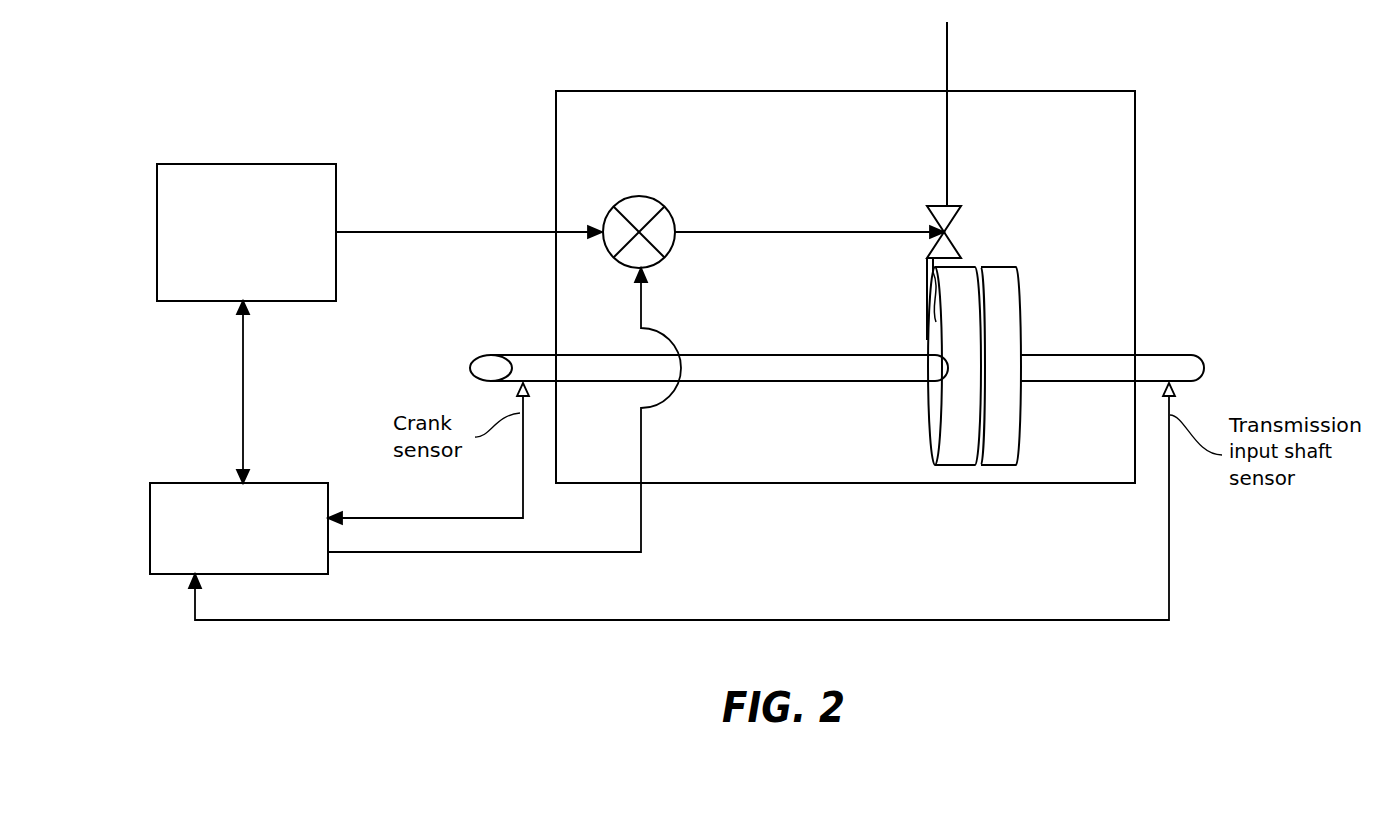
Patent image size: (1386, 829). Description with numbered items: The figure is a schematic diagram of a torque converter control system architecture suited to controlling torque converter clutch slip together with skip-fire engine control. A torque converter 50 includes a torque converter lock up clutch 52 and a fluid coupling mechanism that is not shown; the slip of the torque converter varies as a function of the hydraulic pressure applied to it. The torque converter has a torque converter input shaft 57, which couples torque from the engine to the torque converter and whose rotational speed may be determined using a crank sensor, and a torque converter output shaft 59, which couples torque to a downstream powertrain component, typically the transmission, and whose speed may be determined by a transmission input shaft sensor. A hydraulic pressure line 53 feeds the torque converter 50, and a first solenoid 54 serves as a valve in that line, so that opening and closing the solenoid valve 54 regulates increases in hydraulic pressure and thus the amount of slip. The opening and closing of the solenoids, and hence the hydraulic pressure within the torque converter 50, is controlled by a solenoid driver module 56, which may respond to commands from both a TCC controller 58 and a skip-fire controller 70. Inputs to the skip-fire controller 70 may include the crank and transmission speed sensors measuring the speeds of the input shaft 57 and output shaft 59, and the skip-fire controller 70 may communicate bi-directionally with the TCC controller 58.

The torque converter 50 is at (575, 91).
The torque converter lock up clutch 52 is at (1020, 310).
The hydraulic pressure line 53 is at (948, 58).
The first solenoid 54 is at (948, 206).
The solenoid driver module 56 is at (666, 214).
The torque converter input shaft 57 is at (514, 355).
The TCC controller 58 is at (246, 232).
The torque converter output shaft 59 is at (1159, 355).
The skip-fire controller 70 is at (239, 528).